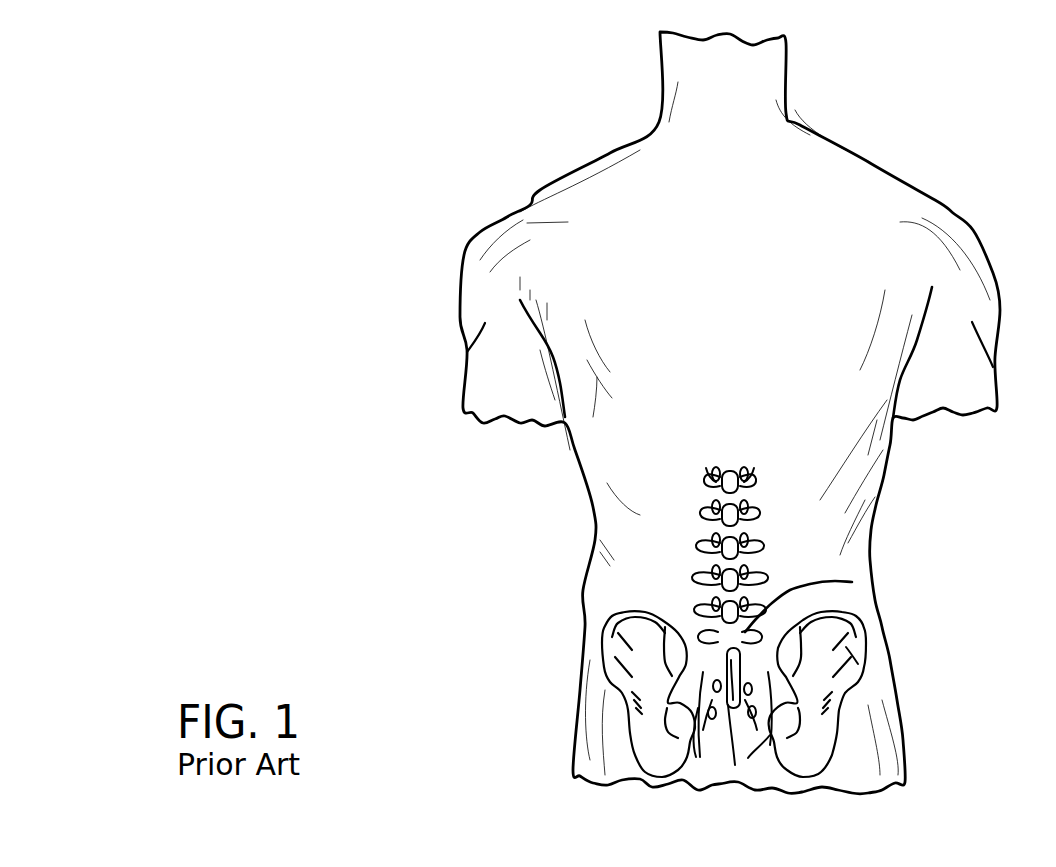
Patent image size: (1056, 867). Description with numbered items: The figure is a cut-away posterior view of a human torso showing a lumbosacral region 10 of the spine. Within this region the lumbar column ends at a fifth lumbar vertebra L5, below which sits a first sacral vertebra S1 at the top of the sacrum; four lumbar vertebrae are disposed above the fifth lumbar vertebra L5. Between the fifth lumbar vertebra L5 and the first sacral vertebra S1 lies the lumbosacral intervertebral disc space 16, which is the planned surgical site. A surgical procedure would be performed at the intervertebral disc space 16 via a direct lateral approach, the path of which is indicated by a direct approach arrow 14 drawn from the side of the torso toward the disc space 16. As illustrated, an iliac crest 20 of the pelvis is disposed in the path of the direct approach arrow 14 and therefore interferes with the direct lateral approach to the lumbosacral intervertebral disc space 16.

The lumbosacral region 10 is at (539, 653).
The direct approach arrow 14 is at (867, 651).
The lumbosacral intervertebral disc space 16 is at (852, 582).
The iliac crest 20 is at (846, 647).
The fifth lumbar vertebra L5 is at (712, 632).
The first sacral vertebra S1 is at (725, 655).